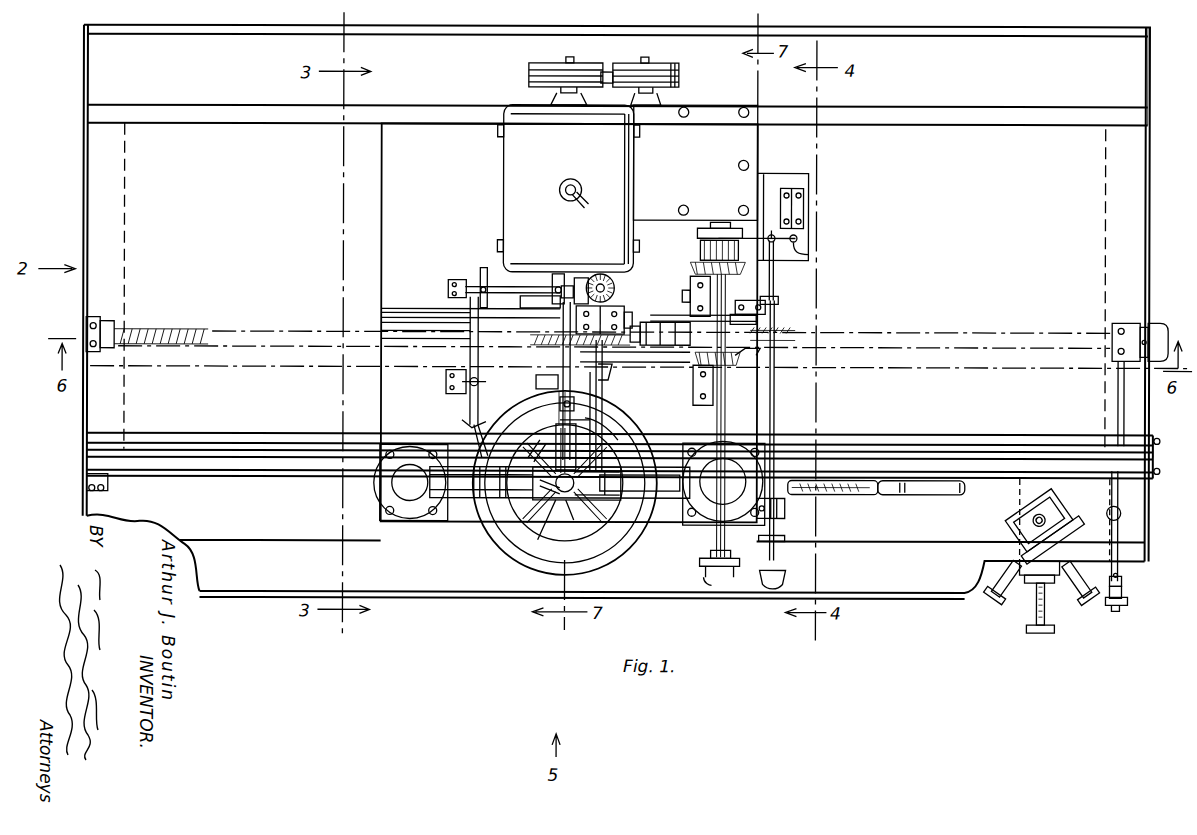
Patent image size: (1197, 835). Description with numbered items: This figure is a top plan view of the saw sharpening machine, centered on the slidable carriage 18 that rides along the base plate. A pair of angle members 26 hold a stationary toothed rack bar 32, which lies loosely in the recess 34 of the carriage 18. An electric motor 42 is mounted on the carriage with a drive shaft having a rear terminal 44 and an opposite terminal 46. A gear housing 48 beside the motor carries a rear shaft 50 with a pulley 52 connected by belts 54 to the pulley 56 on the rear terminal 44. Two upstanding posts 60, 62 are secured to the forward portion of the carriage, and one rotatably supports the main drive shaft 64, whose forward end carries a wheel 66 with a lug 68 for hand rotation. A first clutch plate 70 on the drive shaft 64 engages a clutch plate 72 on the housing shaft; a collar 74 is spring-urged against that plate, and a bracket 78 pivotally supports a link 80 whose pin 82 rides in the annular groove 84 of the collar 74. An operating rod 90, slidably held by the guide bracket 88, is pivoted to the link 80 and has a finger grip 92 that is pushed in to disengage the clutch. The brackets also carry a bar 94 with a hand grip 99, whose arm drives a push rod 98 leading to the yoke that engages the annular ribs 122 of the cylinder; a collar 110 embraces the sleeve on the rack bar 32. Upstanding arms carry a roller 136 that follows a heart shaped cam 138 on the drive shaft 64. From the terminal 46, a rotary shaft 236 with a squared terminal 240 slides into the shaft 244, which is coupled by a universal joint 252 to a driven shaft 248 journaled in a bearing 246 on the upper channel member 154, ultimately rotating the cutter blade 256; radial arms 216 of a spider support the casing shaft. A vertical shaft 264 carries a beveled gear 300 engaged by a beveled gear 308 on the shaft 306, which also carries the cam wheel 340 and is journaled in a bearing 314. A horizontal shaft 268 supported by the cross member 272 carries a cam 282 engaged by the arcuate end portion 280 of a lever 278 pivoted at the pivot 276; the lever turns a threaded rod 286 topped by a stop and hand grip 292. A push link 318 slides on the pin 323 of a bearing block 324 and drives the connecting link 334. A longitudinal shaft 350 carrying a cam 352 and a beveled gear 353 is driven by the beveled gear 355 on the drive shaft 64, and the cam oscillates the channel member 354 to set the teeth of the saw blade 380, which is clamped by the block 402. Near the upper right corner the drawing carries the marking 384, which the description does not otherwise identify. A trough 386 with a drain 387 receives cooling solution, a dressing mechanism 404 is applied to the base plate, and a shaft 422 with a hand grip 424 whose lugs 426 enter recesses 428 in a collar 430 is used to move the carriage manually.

The carriage 18 is at (392, 186).
The angle members 26 is at (88, 318).
The rack bar 32 is at (170, 330).
The recess 34 is at (396, 312).
The motor 42 is at (518, 172).
The rear terminal 44 is at (570, 62).
The terminal 46 is at (554, 273).
The gear housing 48 is at (747, 160).
The rear shaft 50 is at (650, 62).
The pulley 52 is at (678, 66).
The belts 54 is at (606, 70).
The pulley 56 is at (530, 60).
The post 60 is at (724, 483).
The post 62 is at (411, 482).
The main drive shaft 64 is at (740, 445).
The wheel 66 is at (728, 570).
The lug 68 is at (712, 586).
The first clutch plate 70 is at (706, 248).
The clutch plate 72 is at (775, 262).
The collar 74 is at (698, 238).
The bracket 78 is at (804, 208).
The link 80 is at (808, 243).
The pin 82 is at (722, 221).
The annular groove 84 is at (714, 228).
The guide bracket 88 is at (786, 506).
The operating rod 90 is at (776, 290).
The finger grip 92 is at (777, 580).
The bar 94 is at (775, 366).
The push rod 98 is at (690, 302).
The hand grip 99 is at (775, 535).
The collar 110 is at (585, 368).
The annular ribs 122 is at (648, 345).
The roller 136 is at (697, 355).
The heart shaped cam 138 is at (760, 329).
The upper channel member 154 is at (545, 560).
The radial arms 216 is at (536, 440).
The rotary shaft 236 is at (547, 312).
The squared terminal 240 is at (540, 330).
The shaft 244 is at (563, 374).
The bearing 246 is at (603, 450).
The driven shaft 248 is at (566, 450).
The universal joint 252 is at (556, 286).
The cutter blade 256 is at (572, 542).
The vertical shaft 264 is at (606, 275).
The horizontal shaft 268 is at (596, 430).
The cross member 272 is at (452, 500).
The pivot 276 is at (478, 500).
The lever 278 is at (504, 500).
The arcuate end portion 280 is at (622, 484).
The cam 282 is at (640, 496).
The threaded rod 286 is at (565, 495).
The stop and hand grip 292 is at (552, 492).
The beveled gear 300 is at (603, 272).
The shaft 306 is at (672, 296).
The beveled gear 308 is at (577, 276).
The bearing 314 is at (447, 290).
The push link 318 is at (464, 356).
The pin 323 is at (460, 392).
The bearing block 324 is at (446, 382).
The connecting link 334 is at (468, 446).
The wheel 340 is at (480, 270).
The longitudinal shaft 350 is at (606, 412).
The cam 352 is at (556, 389).
The beveled gear 353 is at (680, 428).
The channel member 354 is at (530, 342).
The beveled gear 355 is at (748, 365).
The saw blade 380 is at (862, 488).
The table 384 is at (1114, 76).
The trough 386 is at (897, 598).
The drain 387 is at (1108, 510).
The block 402 is at (930, 494).
The dressing mechanism 404 is at (1024, 623).
The shaft 422 is at (1117, 416).
The hand grip 424 is at (1118, 610).
The lugs 426 is at (1100, 600).
The recesses 428 is at (1126, 598).
The collar 430 is at (1124, 580).